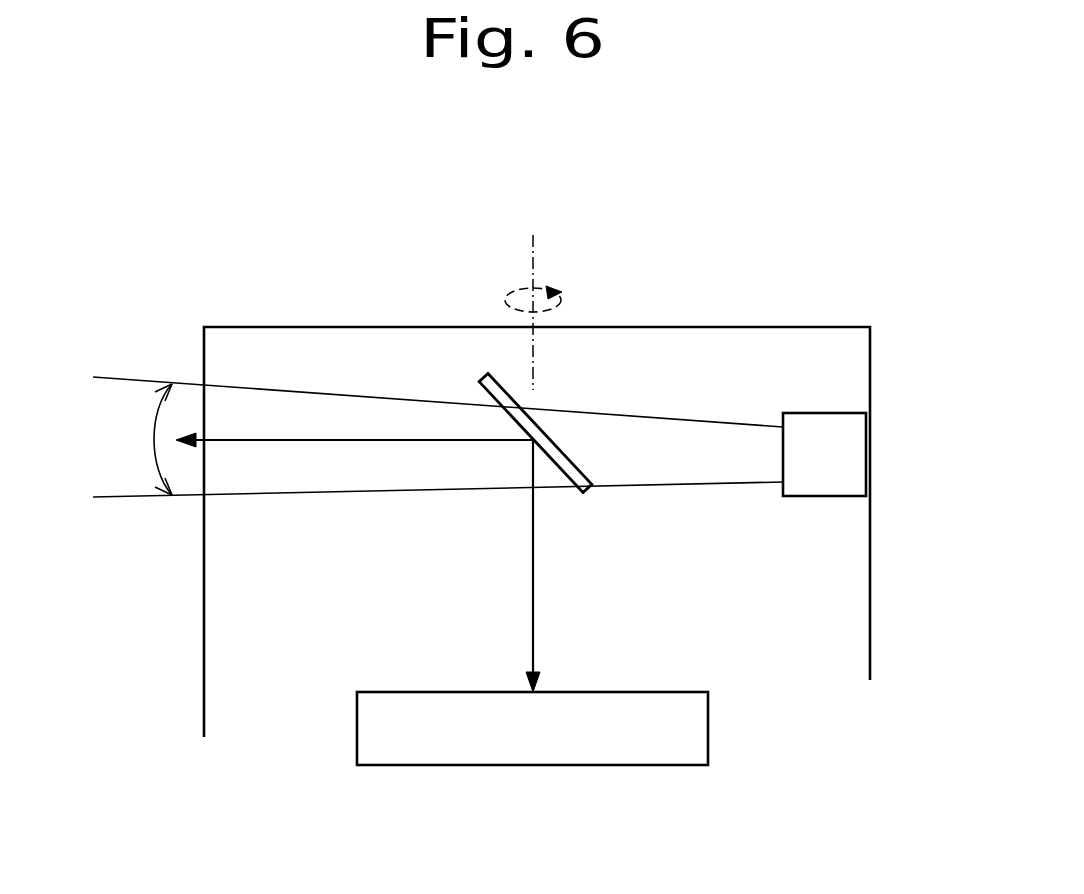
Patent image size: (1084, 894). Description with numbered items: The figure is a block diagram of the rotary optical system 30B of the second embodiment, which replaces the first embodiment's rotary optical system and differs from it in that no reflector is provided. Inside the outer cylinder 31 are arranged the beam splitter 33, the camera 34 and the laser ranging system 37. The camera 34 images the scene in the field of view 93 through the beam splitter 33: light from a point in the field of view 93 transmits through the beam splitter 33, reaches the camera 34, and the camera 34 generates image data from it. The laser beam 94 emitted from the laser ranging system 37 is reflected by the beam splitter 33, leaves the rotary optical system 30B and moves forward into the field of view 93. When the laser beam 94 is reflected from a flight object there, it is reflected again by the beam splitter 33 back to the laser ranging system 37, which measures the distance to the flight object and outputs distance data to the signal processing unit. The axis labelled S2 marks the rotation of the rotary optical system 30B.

The rotary optical system 30B is at (837, 287).
The outer cylinder 31 is at (871, 631).
The beam splitter 33 is at (478, 380).
The camera 34 is at (822, 413).
The laser ranging system 37 is at (356, 728).
The field of view 93 is at (114, 378).
The laser beam 94 is at (535, 622).
The rotation axis S2 is at (535, 273).